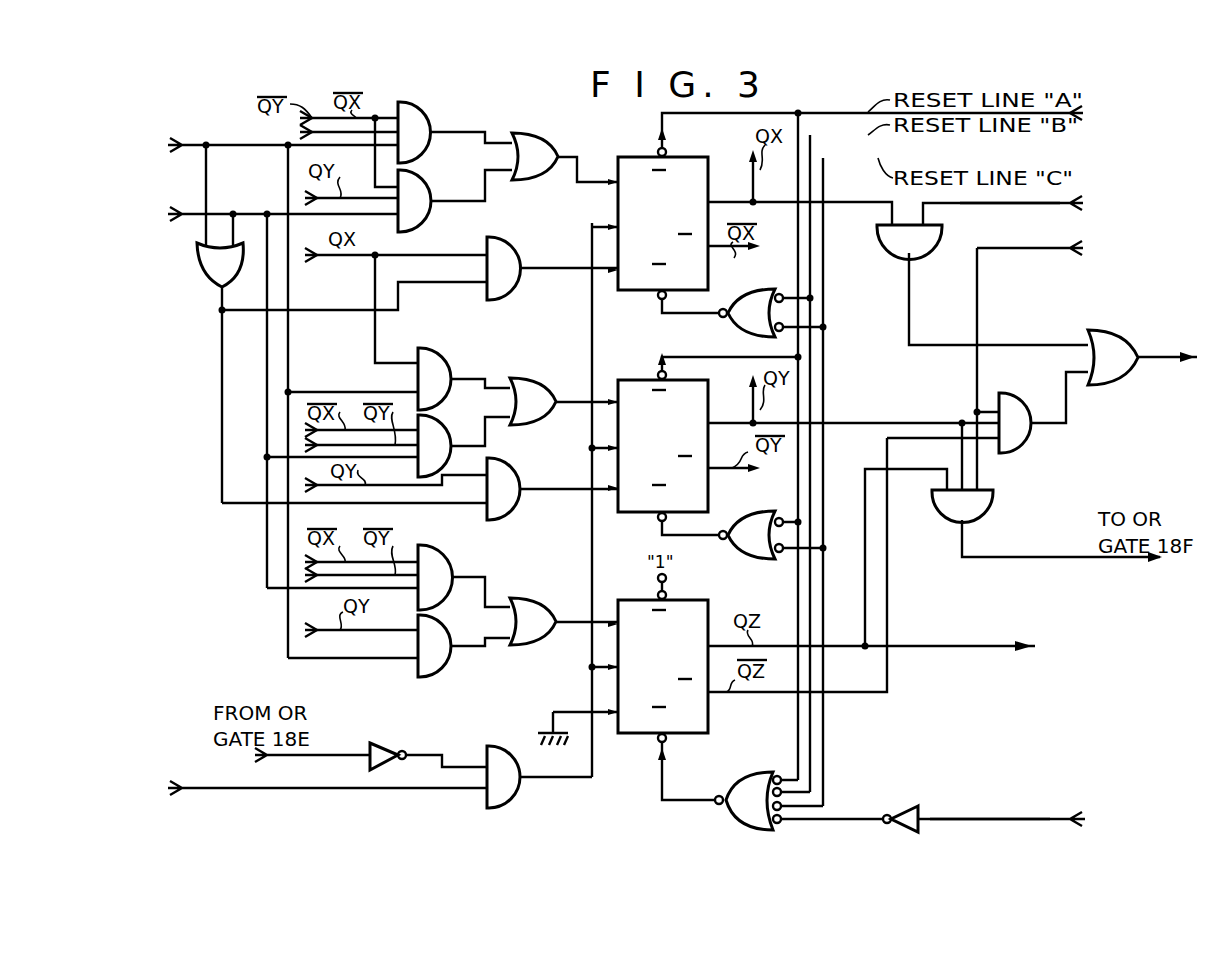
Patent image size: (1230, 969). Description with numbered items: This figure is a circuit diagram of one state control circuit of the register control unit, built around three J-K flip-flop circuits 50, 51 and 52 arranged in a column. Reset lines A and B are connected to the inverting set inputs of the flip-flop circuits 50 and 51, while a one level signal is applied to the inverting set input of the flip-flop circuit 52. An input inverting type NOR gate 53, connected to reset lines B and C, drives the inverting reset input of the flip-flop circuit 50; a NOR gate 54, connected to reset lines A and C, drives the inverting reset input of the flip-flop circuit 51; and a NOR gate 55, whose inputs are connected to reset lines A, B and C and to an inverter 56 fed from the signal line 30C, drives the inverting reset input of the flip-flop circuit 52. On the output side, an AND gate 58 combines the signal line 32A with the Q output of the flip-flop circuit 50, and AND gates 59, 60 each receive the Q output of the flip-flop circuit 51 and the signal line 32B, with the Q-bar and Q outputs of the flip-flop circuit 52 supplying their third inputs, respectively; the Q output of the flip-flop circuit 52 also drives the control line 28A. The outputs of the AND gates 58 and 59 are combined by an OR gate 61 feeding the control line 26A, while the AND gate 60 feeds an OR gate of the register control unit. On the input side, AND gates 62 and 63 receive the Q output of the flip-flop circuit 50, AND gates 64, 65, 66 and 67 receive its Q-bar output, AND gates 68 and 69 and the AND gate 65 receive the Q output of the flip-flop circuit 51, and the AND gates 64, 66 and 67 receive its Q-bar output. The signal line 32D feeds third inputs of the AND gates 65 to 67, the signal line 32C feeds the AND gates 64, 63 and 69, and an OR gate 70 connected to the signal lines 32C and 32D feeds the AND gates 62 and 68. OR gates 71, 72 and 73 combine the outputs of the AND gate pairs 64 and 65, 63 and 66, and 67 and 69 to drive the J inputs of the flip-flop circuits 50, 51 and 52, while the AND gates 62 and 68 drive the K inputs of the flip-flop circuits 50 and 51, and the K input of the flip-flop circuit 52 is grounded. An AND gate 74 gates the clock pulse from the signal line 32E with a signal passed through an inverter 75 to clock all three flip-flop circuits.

The control line 26A is at (1163, 362).
The control line 28A is at (965, 648).
The signal line 30C is at (1000, 819).
The signal line 32A is at (985, 205).
The signal line 32B is at (1000, 250).
The signal line 32C is at (197, 142).
The signal line 32D is at (188, 211).
The signal line 32E is at (283, 788).
The J-K flip-flop circuit 50 is at (686, 155).
The J-K flip-flop circuit 51 is at (630, 375).
The J-K flip-flop circuit 52 is at (633, 598).
The input inverting type NOR gate 53 is at (752, 292).
The input inverting type NOR gate 54 is at (746, 514).
The input inverting type NOR gate 55 is at (754, 774).
The inverter 56 is at (896, 805).
The AND gate 58 is at (887, 246).
The AND gate 59 is at (1020, 455).
The AND gate 60 is at (988, 504).
The OR gate 61 is at (1102, 388).
The AND gate 62 is at (510, 294).
The AND gate 63 is at (447, 362).
The AND gate 64 is at (430, 118).
The AND gate 65 is at (427, 180).
The AND gate 66 is at (445, 420).
The AND gate 67 is at (446, 553).
The AND gate 68 is at (512, 505).
The AND gate 69 is at (445, 624).
The OR gate 70 is at (208, 265).
The OR gate 71 is at (528, 180).
The OR gate 72 is at (538, 420).
The OR gate 73 is at (526, 646).
The AND gate 74 is at (516, 795).
The inverter 75 is at (380, 741).